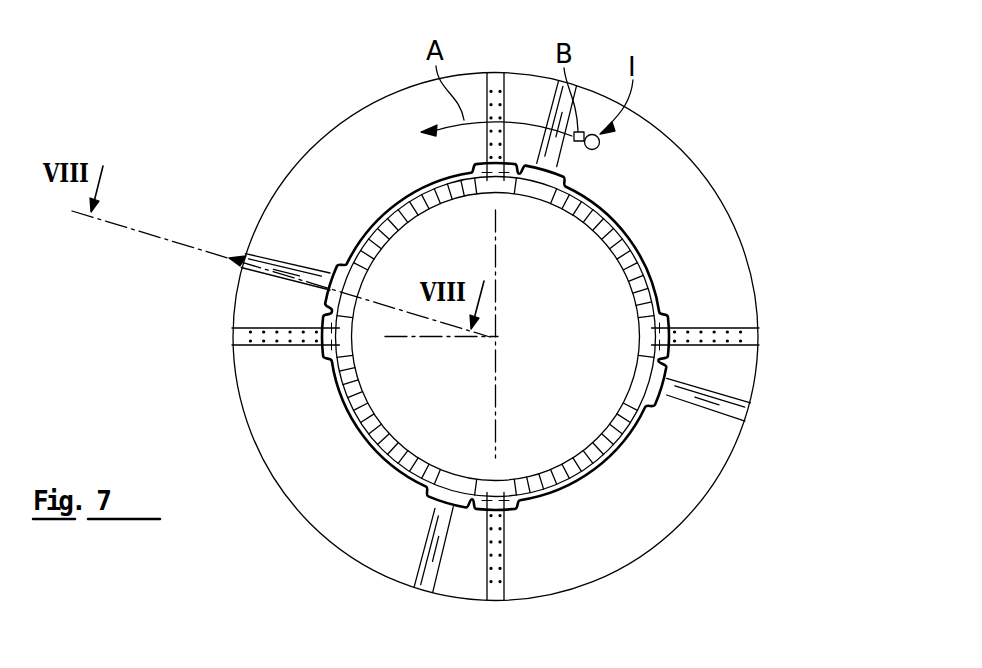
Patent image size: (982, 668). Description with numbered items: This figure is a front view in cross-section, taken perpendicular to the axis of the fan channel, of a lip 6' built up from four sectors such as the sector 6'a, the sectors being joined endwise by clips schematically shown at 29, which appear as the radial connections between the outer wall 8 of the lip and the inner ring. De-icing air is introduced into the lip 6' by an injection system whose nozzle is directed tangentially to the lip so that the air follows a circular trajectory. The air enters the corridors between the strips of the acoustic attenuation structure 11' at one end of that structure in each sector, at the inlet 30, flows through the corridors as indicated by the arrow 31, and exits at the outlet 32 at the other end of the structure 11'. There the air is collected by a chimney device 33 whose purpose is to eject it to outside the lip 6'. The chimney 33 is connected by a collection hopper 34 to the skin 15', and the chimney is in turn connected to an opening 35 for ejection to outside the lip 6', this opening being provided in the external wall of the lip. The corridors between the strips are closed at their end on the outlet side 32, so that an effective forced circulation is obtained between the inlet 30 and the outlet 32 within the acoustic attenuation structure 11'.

The lip 6' is at (523, 337).
The sector 6'a is at (285, 155).
The outer rim 8 is at (641, 129).
The skin 15' is at (483, 301).
The acoustic attenuation structure 11' is at (495, 336).
The clips 29 is at (498, 72).
The inlet 30 is at (479, 199).
The arrow 31 is at (466, 177).
The outlet 32 is at (365, 302).
The chimney 33 is at (295, 273).
The collection hopper 34 is at (335, 266).
The opening 35 is at (240, 268).